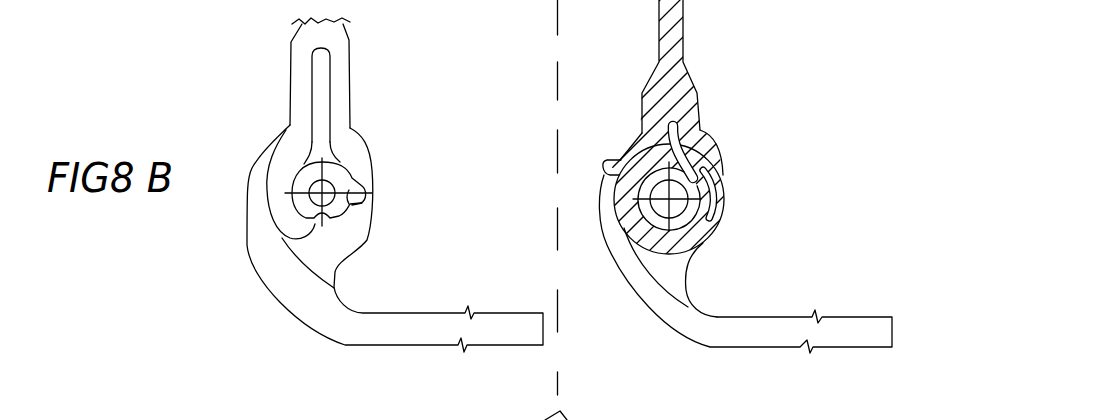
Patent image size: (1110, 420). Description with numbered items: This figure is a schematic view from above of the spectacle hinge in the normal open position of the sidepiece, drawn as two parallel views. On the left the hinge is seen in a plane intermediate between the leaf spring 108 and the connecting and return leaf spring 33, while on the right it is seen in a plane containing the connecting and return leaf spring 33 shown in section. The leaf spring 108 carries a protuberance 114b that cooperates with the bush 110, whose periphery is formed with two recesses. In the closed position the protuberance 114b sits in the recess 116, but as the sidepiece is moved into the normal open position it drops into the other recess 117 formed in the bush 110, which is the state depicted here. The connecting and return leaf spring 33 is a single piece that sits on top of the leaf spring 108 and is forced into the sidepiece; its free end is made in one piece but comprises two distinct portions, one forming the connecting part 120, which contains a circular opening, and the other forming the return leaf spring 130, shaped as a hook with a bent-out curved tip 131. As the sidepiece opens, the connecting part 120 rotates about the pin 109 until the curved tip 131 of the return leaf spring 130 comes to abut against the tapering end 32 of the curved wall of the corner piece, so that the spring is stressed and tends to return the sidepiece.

The leaf spring 108 is at (447, 45).
The bush 110 is at (339, 178).
The protuberance 114b is at (357, 189).
The recess 117 is at (363, 201).
The recess 116 is at (316, 228).
The connecting and return leaf spring 33 is at (684, 34).
The curved tip 131 is at (605, 161).
The connecting part 120 is at (815, 100).
The return leaf spring 130 is at (723, 188).
The pin 109 is at (674, 202).
The end of the corner piece 32 is at (600, 188).